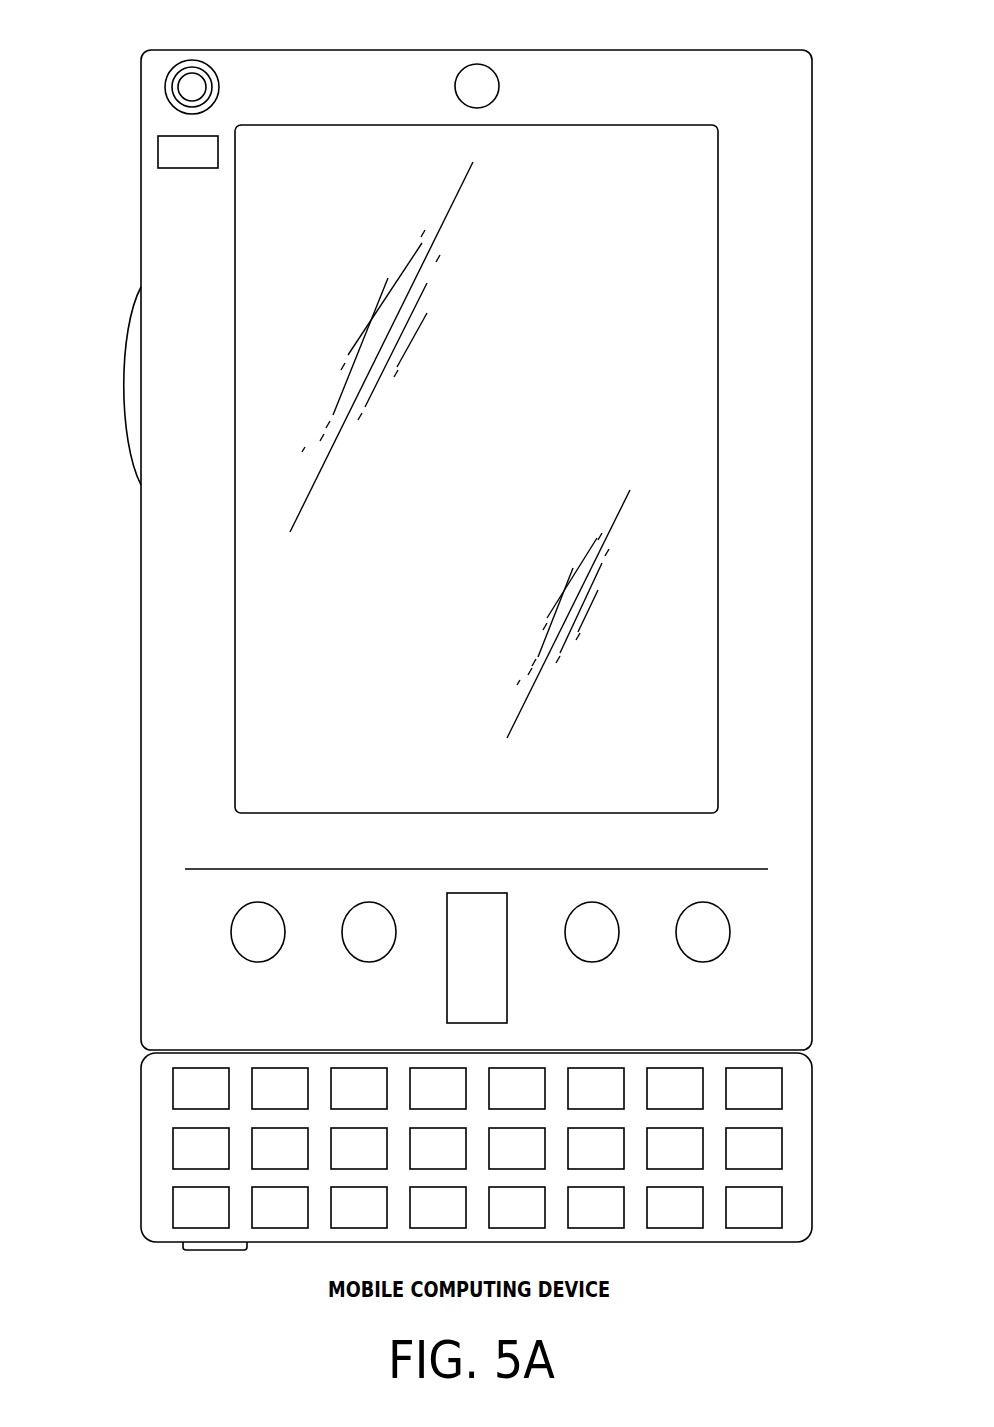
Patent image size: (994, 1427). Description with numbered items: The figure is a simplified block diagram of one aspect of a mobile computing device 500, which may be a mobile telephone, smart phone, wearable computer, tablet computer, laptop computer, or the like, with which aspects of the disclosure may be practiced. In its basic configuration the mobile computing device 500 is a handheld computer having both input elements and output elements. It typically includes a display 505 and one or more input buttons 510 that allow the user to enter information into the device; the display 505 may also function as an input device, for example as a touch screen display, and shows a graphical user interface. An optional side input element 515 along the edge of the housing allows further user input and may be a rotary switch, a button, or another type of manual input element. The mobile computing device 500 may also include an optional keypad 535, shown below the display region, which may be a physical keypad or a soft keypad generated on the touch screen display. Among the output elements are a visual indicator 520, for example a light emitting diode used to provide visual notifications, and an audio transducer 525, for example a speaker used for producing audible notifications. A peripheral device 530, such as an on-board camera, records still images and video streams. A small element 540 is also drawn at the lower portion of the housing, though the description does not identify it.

The mobile computing device 500 is at (775, 50).
The display 505 is at (255, 641).
The input buttons 510 is at (257, 963).
The side input element 515 is at (118, 385).
The visual indicator 520 is at (157, 152).
The audio transducer 525 is at (165, 87).
The peripheral device 530 is at (476, 63).
The keypad 535 is at (157, 1147).
The connector 540 is at (193, 1252).